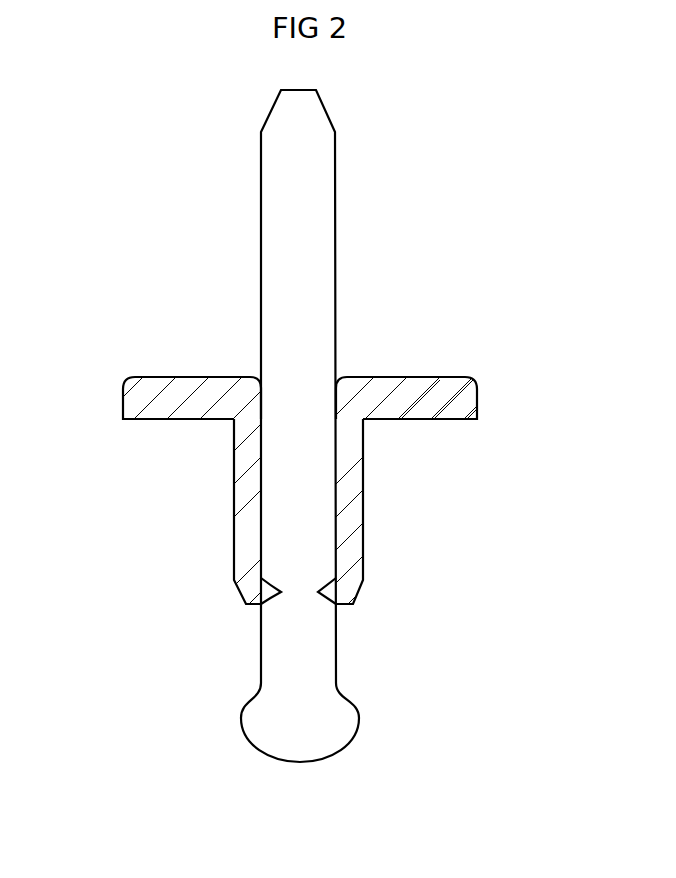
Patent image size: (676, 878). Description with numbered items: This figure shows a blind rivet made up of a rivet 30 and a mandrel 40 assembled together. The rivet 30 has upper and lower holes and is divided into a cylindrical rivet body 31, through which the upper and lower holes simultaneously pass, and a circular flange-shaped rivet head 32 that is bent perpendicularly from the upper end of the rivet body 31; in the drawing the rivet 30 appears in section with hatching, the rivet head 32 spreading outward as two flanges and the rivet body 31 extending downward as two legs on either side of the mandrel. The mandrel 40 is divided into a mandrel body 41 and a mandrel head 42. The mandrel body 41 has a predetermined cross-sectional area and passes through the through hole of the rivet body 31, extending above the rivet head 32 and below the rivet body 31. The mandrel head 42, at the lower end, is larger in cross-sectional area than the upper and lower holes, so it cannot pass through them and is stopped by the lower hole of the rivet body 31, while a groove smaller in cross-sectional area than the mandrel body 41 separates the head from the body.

The rivet 30 is at (345, 415).
The rivet body 31 is at (343, 485).
The rivet head 32 is at (468, 381).
The mandrel 40 is at (302, 426).
The mandrel body 41 is at (325, 239).
The mandrel head 42 is at (314, 678).